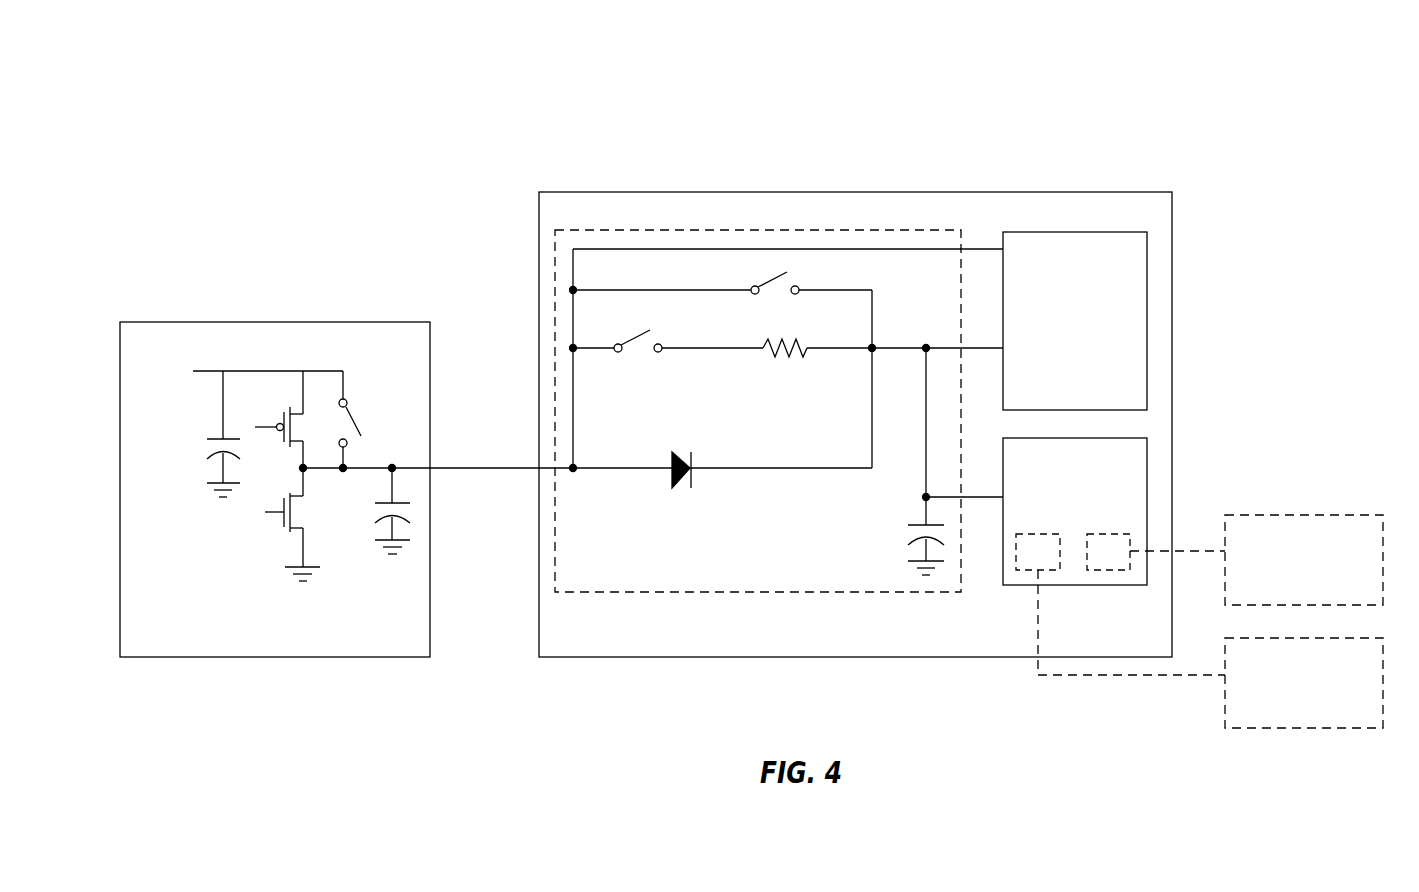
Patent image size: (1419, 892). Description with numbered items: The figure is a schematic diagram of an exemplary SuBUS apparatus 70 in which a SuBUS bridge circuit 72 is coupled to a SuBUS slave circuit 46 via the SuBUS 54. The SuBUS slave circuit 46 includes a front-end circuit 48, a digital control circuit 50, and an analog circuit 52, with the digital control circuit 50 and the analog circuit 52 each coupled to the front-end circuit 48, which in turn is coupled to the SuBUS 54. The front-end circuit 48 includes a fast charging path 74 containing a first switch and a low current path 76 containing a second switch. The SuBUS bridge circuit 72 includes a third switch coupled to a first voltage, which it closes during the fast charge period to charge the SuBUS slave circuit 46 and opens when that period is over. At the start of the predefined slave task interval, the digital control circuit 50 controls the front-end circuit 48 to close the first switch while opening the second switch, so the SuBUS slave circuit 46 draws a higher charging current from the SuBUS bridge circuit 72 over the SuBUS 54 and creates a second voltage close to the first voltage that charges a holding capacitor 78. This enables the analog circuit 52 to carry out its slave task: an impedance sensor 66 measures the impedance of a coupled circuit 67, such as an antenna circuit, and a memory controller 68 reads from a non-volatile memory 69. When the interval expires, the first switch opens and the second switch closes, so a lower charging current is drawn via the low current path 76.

The SuBUS apparatus 70 is at (158, 180).
The SuBUS bridge circuit 72 is at (420, 647).
The SuBUS 54 is at (471, 468).
The SuBUS slave circuit 46 is at (1138, 647).
The front-end circuit 48 is at (576, 594).
The fast charging path 74 is at (692, 290).
The low current path 76 is at (702, 348).
The holding capacitor 78 is at (912, 517).
The digital control circuit 50 is at (1063, 363).
The analog circuit 52 is at (1063, 521).
The impedance sensor 66 is at (1027, 562).
The memory controller 68 is at (1097, 562).
The non-volatile memory 69 is at (1292, 589).
The coupled circuit 67 is at (1292, 712).